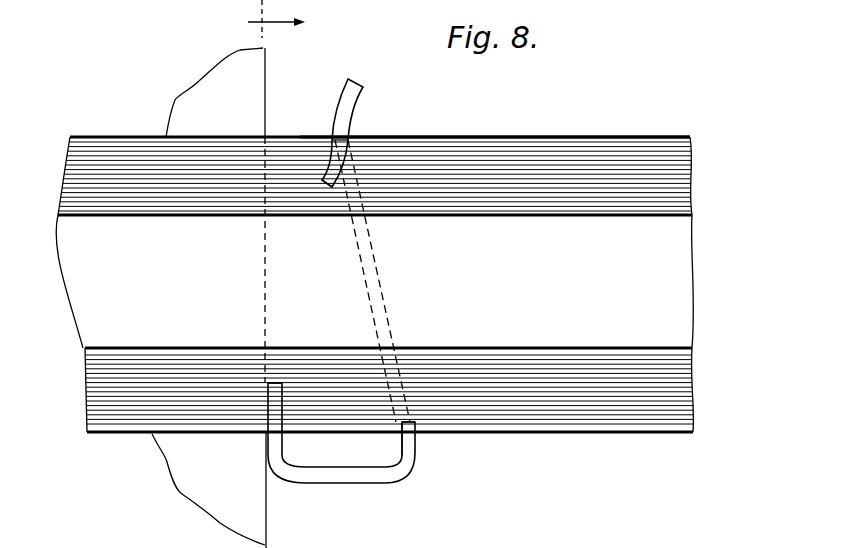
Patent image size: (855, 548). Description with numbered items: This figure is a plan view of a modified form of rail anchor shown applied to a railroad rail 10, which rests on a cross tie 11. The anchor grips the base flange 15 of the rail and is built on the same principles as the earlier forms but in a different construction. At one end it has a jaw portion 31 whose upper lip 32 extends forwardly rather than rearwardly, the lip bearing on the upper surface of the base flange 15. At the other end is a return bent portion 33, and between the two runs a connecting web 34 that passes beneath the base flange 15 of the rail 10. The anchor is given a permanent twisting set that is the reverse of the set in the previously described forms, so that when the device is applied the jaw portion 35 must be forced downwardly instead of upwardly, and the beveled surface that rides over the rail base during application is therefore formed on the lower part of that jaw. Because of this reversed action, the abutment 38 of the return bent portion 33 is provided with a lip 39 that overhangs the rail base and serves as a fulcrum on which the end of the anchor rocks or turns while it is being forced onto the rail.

The railroad rail 10 is at (682, 291).
The cross tie 11 is at (218, 498).
The base flange 15 is at (532, 152).
The jaw portion 31 is at (337, 106).
The upper lip 32 is at (325, 172).
The return bent portion 33 is at (345, 478).
The connecting web 34 is at (383, 310).
The jaw portion 35 is at (275, 400).
The abutment 38 is at (400, 438).
The lip 39 is at (412, 420).